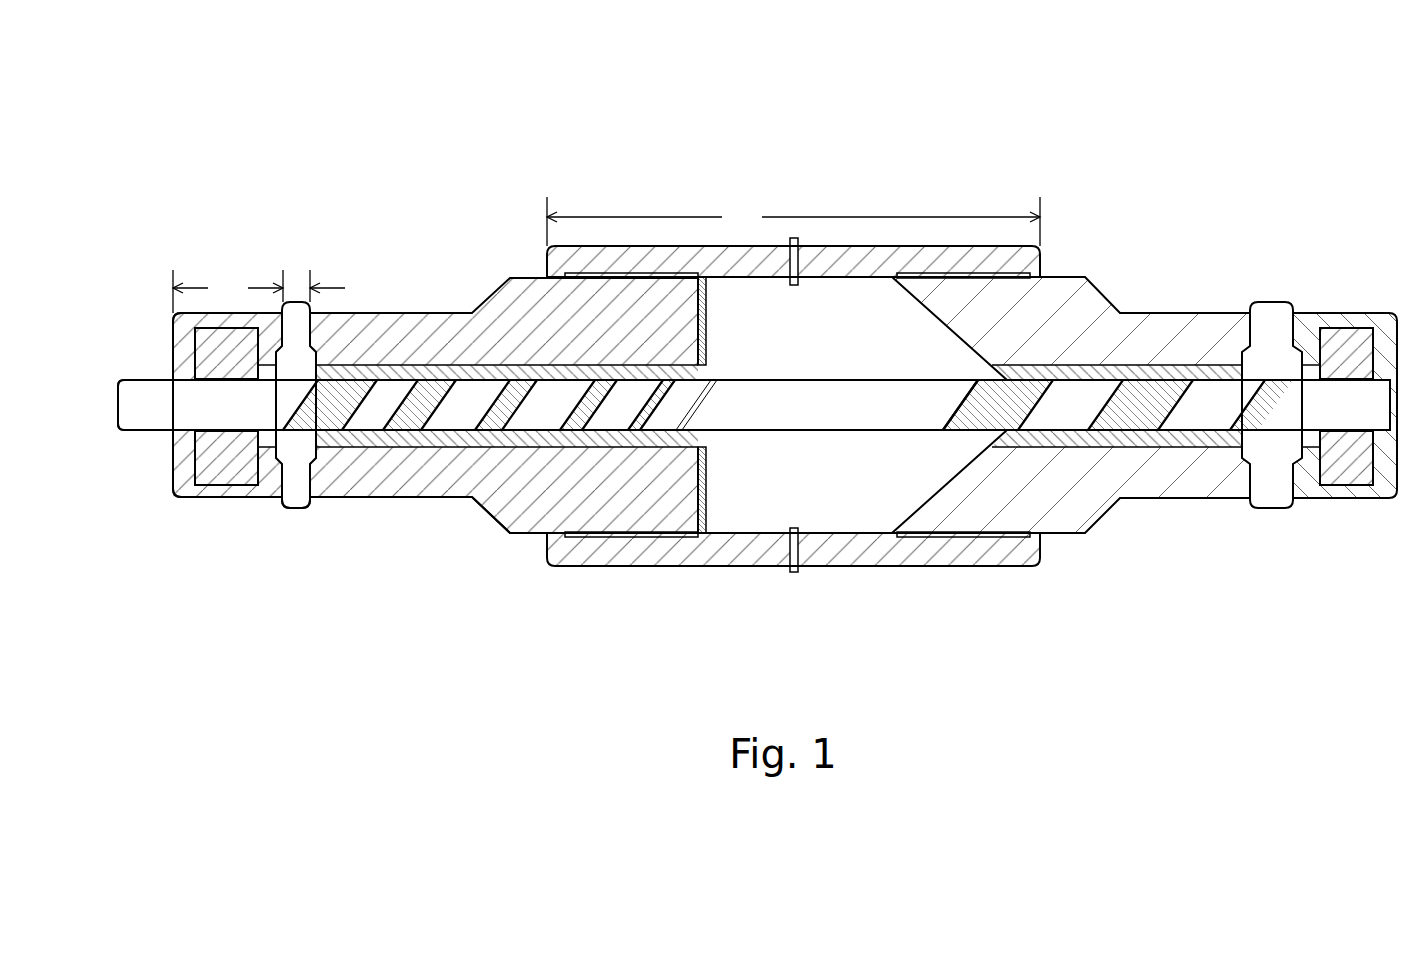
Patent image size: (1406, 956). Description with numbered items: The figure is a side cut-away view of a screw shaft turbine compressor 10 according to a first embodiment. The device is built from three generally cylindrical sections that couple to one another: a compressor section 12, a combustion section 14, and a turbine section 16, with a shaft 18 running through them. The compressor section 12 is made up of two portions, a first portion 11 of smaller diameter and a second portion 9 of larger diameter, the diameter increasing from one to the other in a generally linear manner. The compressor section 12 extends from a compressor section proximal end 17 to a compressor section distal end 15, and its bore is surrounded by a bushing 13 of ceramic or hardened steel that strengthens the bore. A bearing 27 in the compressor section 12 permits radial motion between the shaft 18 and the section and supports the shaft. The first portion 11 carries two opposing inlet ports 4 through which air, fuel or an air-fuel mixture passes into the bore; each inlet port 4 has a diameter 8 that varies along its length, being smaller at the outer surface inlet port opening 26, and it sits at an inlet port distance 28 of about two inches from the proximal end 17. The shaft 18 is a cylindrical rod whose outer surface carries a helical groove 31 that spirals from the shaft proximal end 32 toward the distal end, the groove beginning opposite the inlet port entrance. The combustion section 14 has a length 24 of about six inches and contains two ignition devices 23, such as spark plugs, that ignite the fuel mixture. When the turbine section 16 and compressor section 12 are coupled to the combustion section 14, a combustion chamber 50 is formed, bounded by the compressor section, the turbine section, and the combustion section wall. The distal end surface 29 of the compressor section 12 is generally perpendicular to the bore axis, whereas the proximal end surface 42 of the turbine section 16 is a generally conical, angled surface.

The screw shaft turbine compressor 10 is at (600, 117).
The inlet port 4 is at (295, 352).
The inlet port diameter 8 is at (317, 286).
The second portion 9 is at (532, 502).
The first portion 11 is at (233, 493).
The compressor section 12 is at (388, 313).
The bushing 13 is at (437, 449).
The combustion section 14 is at (875, 246).
The compressor section distal end 15 is at (703, 500).
The turbine section 16 is at (1213, 313).
The compressor section proximal end 17 is at (172, 330).
The shaft 18 is at (145, 398).
The ignition device 23 is at (795, 238).
The length 24 is at (793, 221).
The outer surface inlet port opening 26 is at (297, 488).
The bearing 27 is at (213, 467).
The inlet port distance 28 is at (228, 291).
The distal end surface 29 is at (707, 305).
The groove 31 is at (700, 418).
The shaft proximal end 32 is at (120, 408).
The proximal end surface 42 is at (940, 480).
The combustion chamber 50 is at (853, 505).